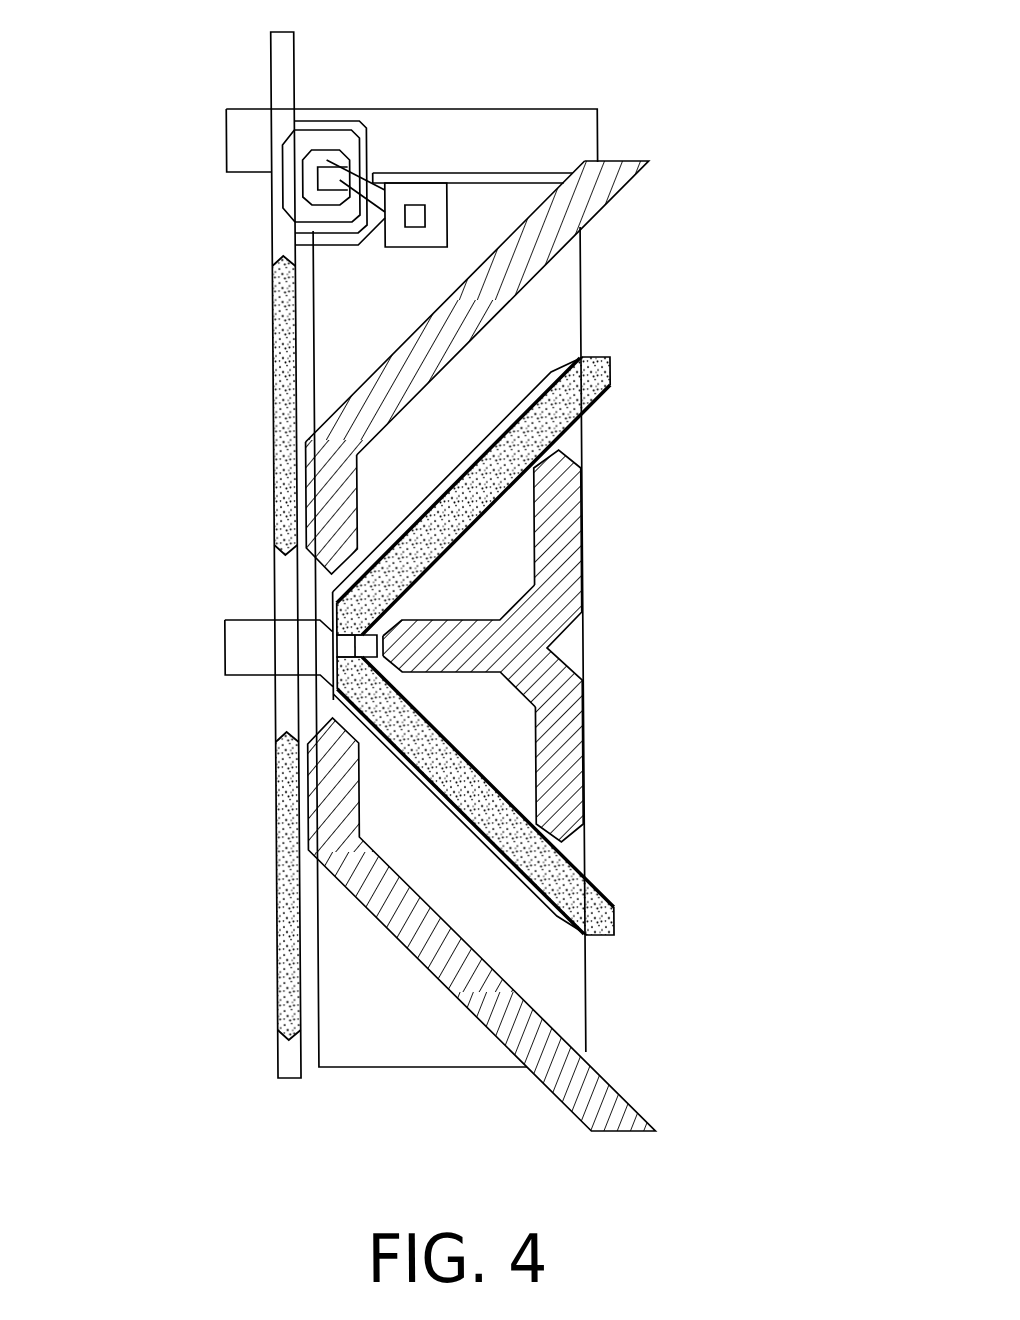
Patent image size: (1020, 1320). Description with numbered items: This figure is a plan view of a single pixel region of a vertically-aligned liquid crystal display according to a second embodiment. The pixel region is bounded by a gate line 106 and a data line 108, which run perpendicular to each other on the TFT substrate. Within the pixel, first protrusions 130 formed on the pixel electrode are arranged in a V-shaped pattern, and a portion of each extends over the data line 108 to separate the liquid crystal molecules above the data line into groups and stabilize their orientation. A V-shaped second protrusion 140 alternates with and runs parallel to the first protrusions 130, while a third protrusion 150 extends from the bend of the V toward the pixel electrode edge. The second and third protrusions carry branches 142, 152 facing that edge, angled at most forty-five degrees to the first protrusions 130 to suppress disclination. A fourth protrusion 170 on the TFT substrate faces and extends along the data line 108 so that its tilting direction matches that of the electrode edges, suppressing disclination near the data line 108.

The gate line 106 is at (233, 137).
The data line 108 is at (289, 48).
The first protrusion 130 is at (599, 378).
The second protrusion 140 is at (540, 258).
The branch 142 is at (324, 512).
The third protrusion 150 is at (460, 642).
The branch 152 is at (553, 532).
The fourth protrusion 170 is at (276, 335).